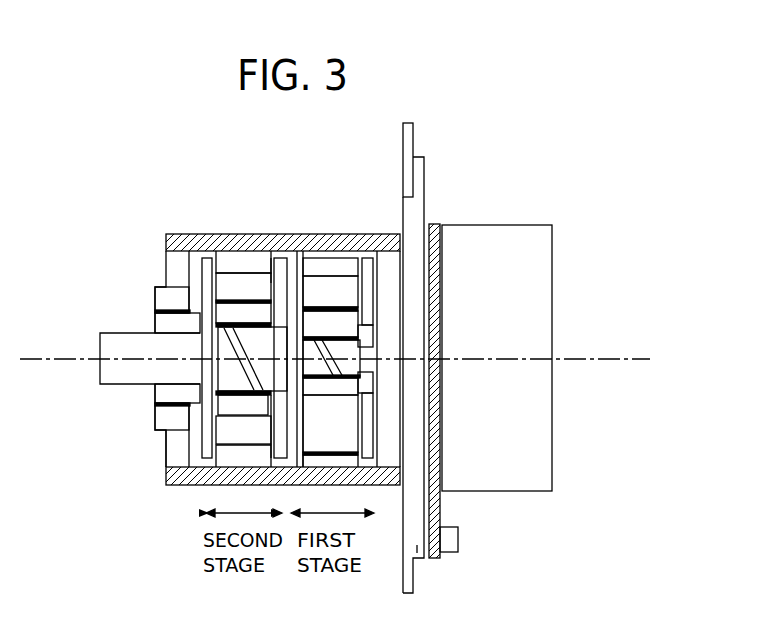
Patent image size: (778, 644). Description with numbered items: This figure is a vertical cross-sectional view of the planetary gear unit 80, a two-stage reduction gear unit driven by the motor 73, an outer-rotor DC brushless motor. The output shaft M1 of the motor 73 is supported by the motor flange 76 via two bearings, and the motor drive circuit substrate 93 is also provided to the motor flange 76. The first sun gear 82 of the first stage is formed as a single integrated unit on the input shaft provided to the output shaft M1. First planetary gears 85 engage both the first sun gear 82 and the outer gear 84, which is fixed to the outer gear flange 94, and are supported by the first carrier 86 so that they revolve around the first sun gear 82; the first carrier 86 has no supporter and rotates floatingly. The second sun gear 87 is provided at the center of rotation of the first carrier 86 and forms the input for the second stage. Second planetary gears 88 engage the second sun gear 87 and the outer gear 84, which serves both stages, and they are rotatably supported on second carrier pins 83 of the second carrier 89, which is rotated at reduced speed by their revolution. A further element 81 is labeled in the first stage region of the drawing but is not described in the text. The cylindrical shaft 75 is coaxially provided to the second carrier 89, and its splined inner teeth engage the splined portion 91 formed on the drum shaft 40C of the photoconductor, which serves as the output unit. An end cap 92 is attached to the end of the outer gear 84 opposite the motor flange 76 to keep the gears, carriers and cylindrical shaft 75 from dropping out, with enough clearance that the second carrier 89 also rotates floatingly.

The drum shaft 40C is at (105, 348).
The splined portion 91 is at (152, 324).
The cylindrical shaft 75 is at (158, 322).
The second planetary gears 88 is at (230, 312).
The second sun gear 87 is at (177, 386).
The second carrier 89 is at (203, 417).
The end cap 92 is at (173, 443).
The planetary gear unit 80 is at (175, 496).
The second carrier pins 83 is at (234, 285).
The outer gear 84 is at (279, 240).
The first planetary gears 85 is at (320, 262).
The first stage planetary gear 81 is at (340, 292).
The first sun gear 82 is at (340, 347).
The output shaft M1 is at (367, 367).
The first carrier 86 is at (293, 430).
The motor 73 is at (552, 452).
The motor drive circuit substrate 93 is at (441, 507).
The outer gear flange 94 is at (388, 455).
The motor flange 76 is at (417, 553).